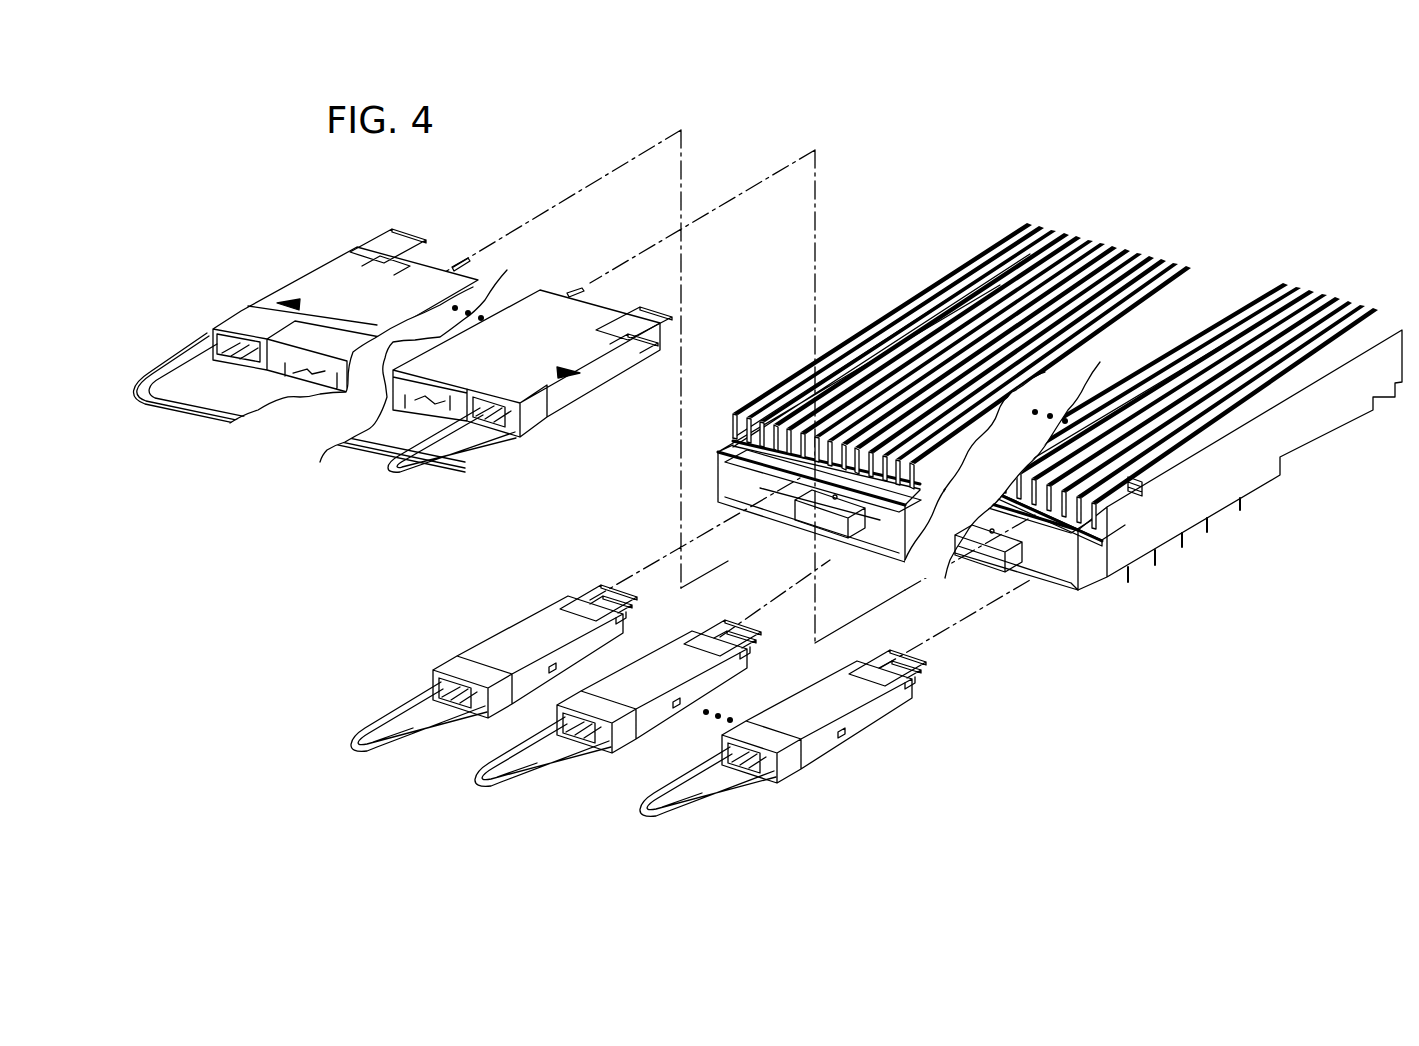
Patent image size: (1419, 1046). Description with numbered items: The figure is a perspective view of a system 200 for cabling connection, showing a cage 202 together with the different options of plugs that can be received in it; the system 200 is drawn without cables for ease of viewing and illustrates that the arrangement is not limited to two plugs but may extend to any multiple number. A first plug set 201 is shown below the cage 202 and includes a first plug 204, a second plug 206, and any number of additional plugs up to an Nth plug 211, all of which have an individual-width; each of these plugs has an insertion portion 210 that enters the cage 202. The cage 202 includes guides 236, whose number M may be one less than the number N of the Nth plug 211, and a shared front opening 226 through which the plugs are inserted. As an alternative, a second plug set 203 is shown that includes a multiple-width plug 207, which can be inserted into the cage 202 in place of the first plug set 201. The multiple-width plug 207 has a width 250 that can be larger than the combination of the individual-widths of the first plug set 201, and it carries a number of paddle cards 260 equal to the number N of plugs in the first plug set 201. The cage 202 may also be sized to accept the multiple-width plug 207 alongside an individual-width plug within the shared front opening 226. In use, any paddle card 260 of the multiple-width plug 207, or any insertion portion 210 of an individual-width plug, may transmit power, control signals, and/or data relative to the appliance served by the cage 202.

The system 200 is at (1138, 657).
The first plug set 201 is at (388, 625).
The cage 202 is at (977, 243).
The second plug set 203 is at (267, 278).
The first plug 204 is at (524, 604).
The second plug 206 is at (617, 767).
The multiple-width plug 207 is at (318, 250).
The insertion portion 210 is at (636, 604).
The Nth plug 211 is at (875, 737).
The front opening 226 is at (734, 501).
The guide 236 is at (799, 541).
The width 250 is at (320, 318).
The paddle card 260 is at (662, 333).